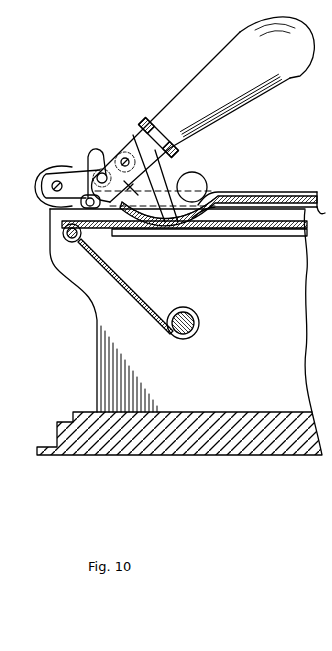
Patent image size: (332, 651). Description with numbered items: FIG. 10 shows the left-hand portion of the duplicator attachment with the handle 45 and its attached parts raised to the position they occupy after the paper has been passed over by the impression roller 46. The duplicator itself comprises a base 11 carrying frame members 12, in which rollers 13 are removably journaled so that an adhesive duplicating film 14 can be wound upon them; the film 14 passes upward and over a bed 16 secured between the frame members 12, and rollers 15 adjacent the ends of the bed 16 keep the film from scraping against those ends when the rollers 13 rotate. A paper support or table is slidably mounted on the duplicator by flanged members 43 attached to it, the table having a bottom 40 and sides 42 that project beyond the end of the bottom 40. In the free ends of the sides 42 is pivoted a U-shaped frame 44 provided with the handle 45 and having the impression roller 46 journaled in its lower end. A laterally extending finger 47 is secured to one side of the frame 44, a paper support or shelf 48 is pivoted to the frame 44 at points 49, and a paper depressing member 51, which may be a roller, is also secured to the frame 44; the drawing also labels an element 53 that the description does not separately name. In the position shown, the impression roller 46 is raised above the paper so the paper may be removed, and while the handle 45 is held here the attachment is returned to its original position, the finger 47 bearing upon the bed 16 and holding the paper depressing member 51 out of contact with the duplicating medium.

The base 11 is at (190, 449).
The frame members 12 is at (107, 346).
The rollers 13 is at (199, 331).
The adhesive duplicating film 14 is at (110, 288).
The rollers 15 is at (81, 239).
The bed 16 is at (256, 233).
The bottom 40 is at (318, 209).
The sides 42 is at (262, 196).
The flanged members 43 is at (90, 172).
The U-shaped frame 44 is at (137, 140).
The handle 45 is at (213, 78).
The impression roller 46 is at (45, 171).
The finger 47 is at (190, 231).
The paper support or shelf 48 is at (126, 207).
The pivot points 49 is at (93, 147).
The paper depressing member 51 is at (206, 181).
The strip 53 is at (296, 195).